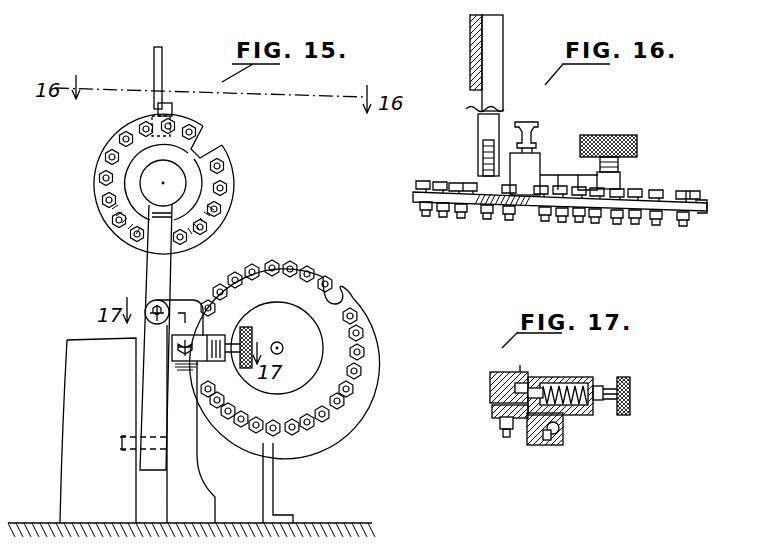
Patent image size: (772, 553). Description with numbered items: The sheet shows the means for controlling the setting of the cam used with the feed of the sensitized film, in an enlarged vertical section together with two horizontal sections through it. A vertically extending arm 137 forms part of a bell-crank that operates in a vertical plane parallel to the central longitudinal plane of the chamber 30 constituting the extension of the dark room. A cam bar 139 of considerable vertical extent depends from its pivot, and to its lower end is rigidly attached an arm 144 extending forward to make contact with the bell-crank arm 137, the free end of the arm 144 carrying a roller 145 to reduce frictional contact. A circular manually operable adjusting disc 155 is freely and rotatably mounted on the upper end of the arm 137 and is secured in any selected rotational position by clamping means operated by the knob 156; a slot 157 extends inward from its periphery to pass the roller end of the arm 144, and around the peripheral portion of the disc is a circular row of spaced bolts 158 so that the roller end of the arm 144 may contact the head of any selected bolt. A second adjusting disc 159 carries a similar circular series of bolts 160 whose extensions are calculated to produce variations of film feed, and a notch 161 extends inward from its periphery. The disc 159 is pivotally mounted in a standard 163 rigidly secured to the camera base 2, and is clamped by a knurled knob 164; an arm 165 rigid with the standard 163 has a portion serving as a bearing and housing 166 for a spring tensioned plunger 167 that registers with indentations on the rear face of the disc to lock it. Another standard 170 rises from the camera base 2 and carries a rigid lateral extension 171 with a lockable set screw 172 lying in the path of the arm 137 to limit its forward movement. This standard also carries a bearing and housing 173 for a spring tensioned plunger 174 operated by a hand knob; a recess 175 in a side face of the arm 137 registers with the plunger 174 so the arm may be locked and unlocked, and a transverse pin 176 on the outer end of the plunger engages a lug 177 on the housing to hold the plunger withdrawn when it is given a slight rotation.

In FIG. 15, the camera base 2 is at (33, 506).
In FIG. 15, the chamber 30 is at (76, 385).
In FIG. 15, the vertically extending arm 137 is at (150, 262).
In FIG. 17, the vertically extending arm 137 is at (503, 372).
In FIG. 15, the cam bar 139 is at (153, 60).
In FIG. 16, the cam bar 139 is at (470, 42).
In FIG. 15, the arm 144 is at (170, 104).
In FIG. 16, the arm 144 is at (480, 126).
In FIG. 16, the roller 145 is at (483, 156).
In FIG. 15, the adjusting disc 155 is at (105, 147).
In FIG. 16, the adjusting disc 155 is at (414, 196).
In FIG. 15, the knob 156 is at (153, 176).
In FIG. 15, the slot 157 is at (207, 146).
In FIG. 16, the slot 157 is at (533, 207).
In FIG. 15, the bolts 158 is at (223, 211).
In FIG. 16, the bolts 158 is at (482, 219).
In FIG. 15, the second adjusting disc 159 is at (373, 352).
In FIG. 16, the second adjusting disc 159 is at (700, 209).
In FIG. 15, the bolts 160 is at (331, 423).
In FIG. 16, the bolts 160 is at (657, 193).
In FIG. 15, the notch 161 is at (345, 296).
In FIG. 15, the standard 163 is at (275, 485).
In FIG. 16, the standard 163 is at (621, 180).
In FIG. 16, the knurled knob 164 is at (622, 138).
In FIG. 16, the arm 165 is at (546, 175).
In FIG. 16, the bearing and housing 166 is at (530, 166).
In FIG. 16, the plunger 167 is at (525, 121).
In FIG. 15, the standard 170 is at (190, 453).
In FIG. 17, the standard 170 is at (550, 446).
In FIG. 15, the lateral extension 171 is at (153, 300).
In FIG. 15, the set screw 172 is at (150, 324).
In FIG. 17, the set screw 172 is at (508, 438).
In FIG. 15, the bearing and housing 173 is at (208, 336).
In FIG. 17, the bearing and housing 173 is at (558, 380).
In FIG. 15, the plunger 174 is at (253, 335).
In FIG. 17, the plunger 174 is at (631, 397).
In FIG. 17, the recess 175 is at (520, 370).
In FIG. 17, the transverse pin 176 is at (598, 401).
In FIG. 17, the lug 177 is at (600, 386).